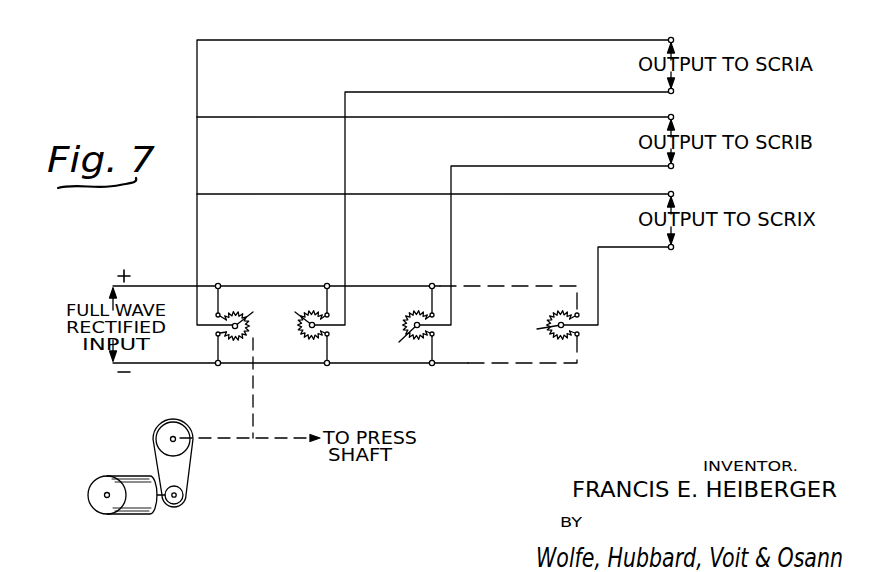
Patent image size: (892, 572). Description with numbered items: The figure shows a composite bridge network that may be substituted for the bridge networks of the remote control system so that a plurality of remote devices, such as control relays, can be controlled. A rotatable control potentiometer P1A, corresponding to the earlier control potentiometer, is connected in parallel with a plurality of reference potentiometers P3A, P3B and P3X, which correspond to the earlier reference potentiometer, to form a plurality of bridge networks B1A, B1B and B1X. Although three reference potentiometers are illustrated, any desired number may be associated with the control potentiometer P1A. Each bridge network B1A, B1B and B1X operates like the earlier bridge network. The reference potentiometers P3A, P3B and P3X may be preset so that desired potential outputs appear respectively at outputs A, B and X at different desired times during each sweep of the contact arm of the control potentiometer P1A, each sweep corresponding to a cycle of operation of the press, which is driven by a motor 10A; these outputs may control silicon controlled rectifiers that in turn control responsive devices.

The motor 10A is at (120, 515).
The rotatable control potentiometer P1A is at (236, 324).
The reference potentiometer P3A is at (308, 324).
The reference potentiometer P3B is at (411, 324).
The reference potentiometer P3X is at (554, 314).
The bridge network B1A is at (325, 367).
The bridge network B1B is at (430, 367).
The bridge network B1X is at (575, 367).